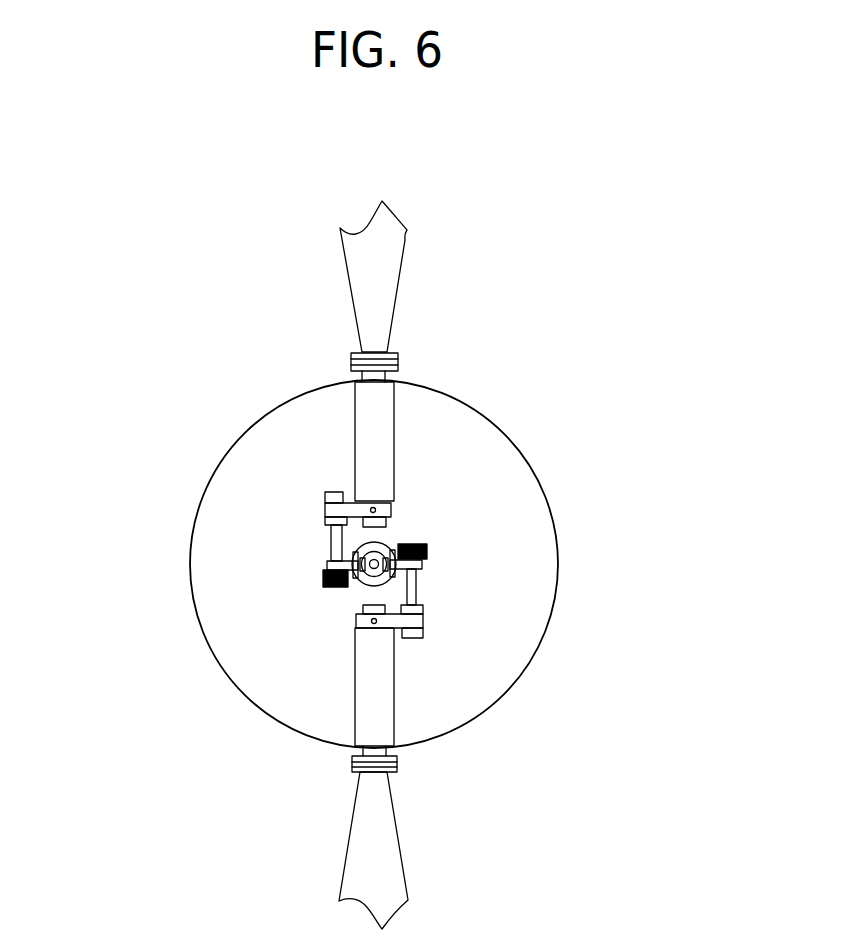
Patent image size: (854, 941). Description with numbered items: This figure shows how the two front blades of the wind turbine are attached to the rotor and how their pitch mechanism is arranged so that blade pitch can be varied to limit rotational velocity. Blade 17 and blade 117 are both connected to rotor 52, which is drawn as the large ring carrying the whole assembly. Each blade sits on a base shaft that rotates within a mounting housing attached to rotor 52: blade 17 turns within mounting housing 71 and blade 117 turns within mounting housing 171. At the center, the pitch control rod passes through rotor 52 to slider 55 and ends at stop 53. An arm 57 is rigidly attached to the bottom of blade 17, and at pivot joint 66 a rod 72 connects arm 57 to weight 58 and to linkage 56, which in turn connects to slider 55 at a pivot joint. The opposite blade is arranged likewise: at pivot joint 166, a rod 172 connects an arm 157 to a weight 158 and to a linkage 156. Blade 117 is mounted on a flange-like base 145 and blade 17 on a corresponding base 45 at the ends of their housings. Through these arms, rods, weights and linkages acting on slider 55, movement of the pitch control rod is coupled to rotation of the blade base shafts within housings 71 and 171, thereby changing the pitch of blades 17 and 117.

The blade 17 is at (393, 845).
The lower blade mounting flange 45 is at (357, 773).
The rotor 52 is at (563, 573).
The stop 53 is at (368, 582).
The slider 55 is at (398, 545).
The linkage 56 is at (423, 565).
The arm 57 is at (397, 620).
The weight 58 is at (423, 542).
The pivot joint 66 is at (422, 628).
The mounting housing 71 is at (357, 678).
The rod 72 is at (420, 583).
The blade 117 is at (395, 258).
The upper blade mounting flange 145 is at (350, 353).
The linkage 156 is at (327, 563).
The arm 157 is at (353, 510).
The weight 158 is at (323, 588).
The pivot joint 166 is at (322, 507).
The mounting housing 171 is at (388, 400).
The rod 172 is at (327, 547).